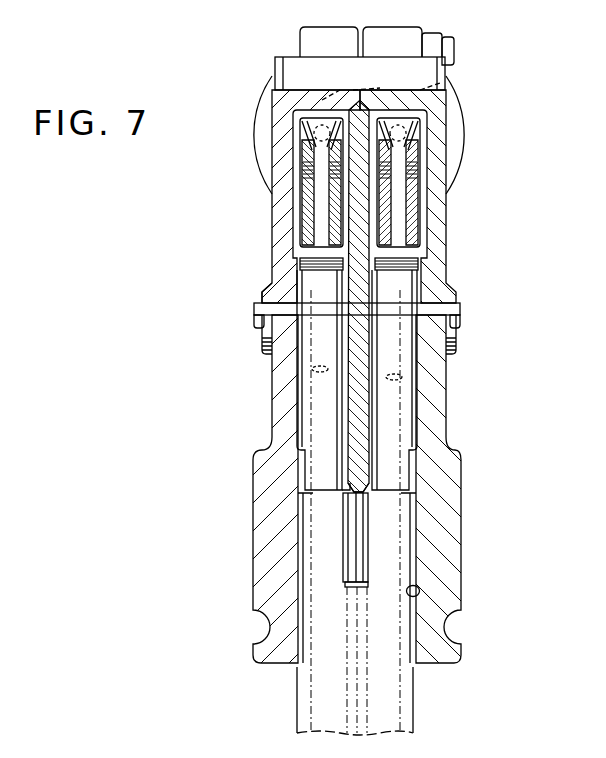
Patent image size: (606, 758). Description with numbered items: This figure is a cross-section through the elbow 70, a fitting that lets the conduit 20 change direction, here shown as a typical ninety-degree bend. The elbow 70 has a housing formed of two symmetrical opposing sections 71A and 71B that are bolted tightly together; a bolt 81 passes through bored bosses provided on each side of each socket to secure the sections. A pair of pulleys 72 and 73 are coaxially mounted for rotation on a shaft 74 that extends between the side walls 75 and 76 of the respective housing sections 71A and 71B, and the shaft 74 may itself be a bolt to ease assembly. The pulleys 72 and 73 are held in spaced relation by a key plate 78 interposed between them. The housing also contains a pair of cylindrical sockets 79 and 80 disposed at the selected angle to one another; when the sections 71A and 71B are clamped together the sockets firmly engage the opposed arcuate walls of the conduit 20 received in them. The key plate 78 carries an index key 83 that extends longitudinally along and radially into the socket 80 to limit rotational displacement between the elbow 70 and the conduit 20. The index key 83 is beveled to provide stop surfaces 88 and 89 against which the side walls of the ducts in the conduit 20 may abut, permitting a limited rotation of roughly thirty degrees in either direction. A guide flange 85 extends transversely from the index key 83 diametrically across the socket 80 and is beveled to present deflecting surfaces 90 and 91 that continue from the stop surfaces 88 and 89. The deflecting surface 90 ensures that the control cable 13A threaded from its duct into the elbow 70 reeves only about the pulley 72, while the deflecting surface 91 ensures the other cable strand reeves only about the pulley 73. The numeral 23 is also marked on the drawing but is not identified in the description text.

The conduit 20 is at (413, 707).
The elbow 70 is at (472, 228).
The housing section 71A is at (271, 227).
The housing section 71B is at (438, 178).
The pulley 72 is at (322, 200).
The pulley 73 is at (412, 205).
The shaft 74 is at (455, 317).
The side wall 75 is at (282, 268).
The side wall 76 is at (437, 265).
The key plate 78 is at (367, 362).
The socket 79 is at (447, 86).
The socket 80 is at (407, 592).
The bolt 81 is at (454, 52).
The index key 83 is at (370, 553).
The guide flange 85 is at (372, 473).
The stop surface 88 is at (343, 530).
The stop surface 89 is at (365, 525).
The deflecting surface 90 is at (350, 490).
The deflecting surface 91 is at (370, 492).
The control cable 13A is at (246, 755).
The conductor 23 is at (397, 755).